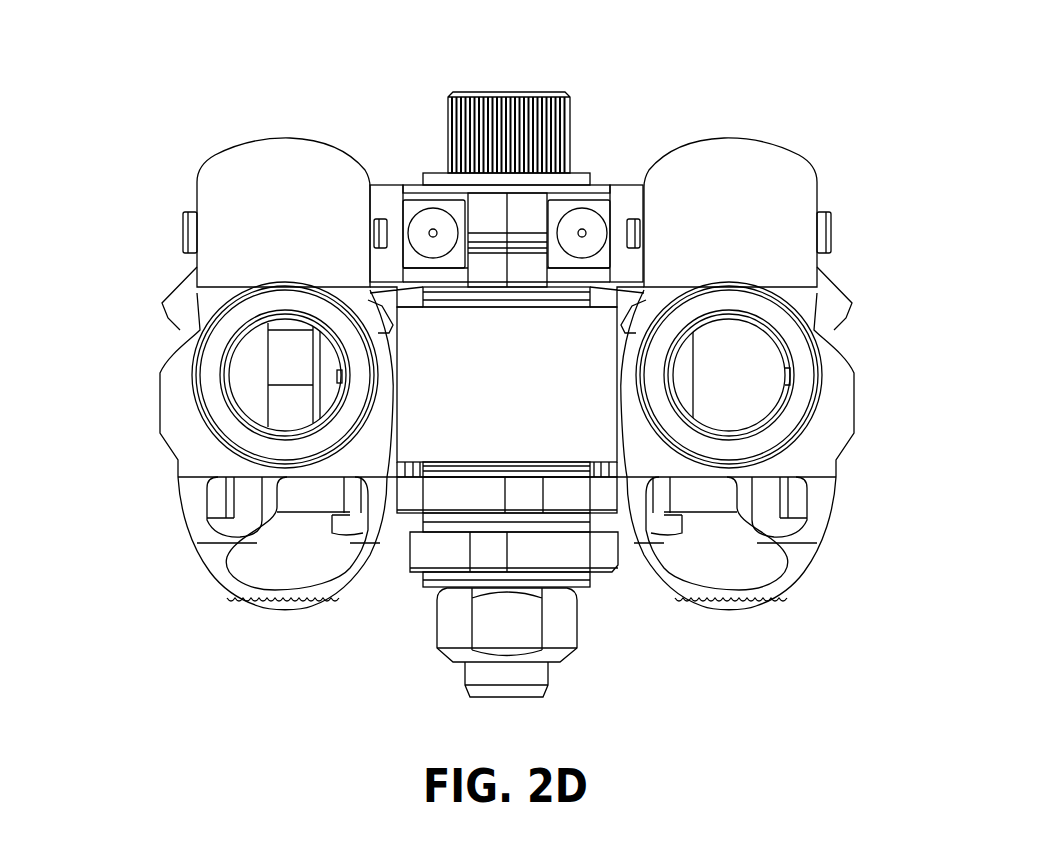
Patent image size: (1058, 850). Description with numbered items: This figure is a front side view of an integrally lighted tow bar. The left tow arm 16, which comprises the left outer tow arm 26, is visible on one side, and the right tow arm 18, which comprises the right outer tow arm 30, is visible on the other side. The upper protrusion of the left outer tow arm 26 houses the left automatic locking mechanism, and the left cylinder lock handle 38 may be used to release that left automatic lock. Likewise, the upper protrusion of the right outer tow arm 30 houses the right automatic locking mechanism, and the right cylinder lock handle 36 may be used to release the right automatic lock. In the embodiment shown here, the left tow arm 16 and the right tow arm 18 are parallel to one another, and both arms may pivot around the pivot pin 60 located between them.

The left tow arm 16 is at (885, 383).
The right tow arm 18 is at (122, 420).
The left outer tow arm 26 is at (817, 188).
The right outer tow arm 30 is at (243, 165).
The right cylinder lock handle 36 is at (437, 213).
The left cylinder lock handle 38 is at (588, 215).
The pivot pin 60 is at (527, 100).